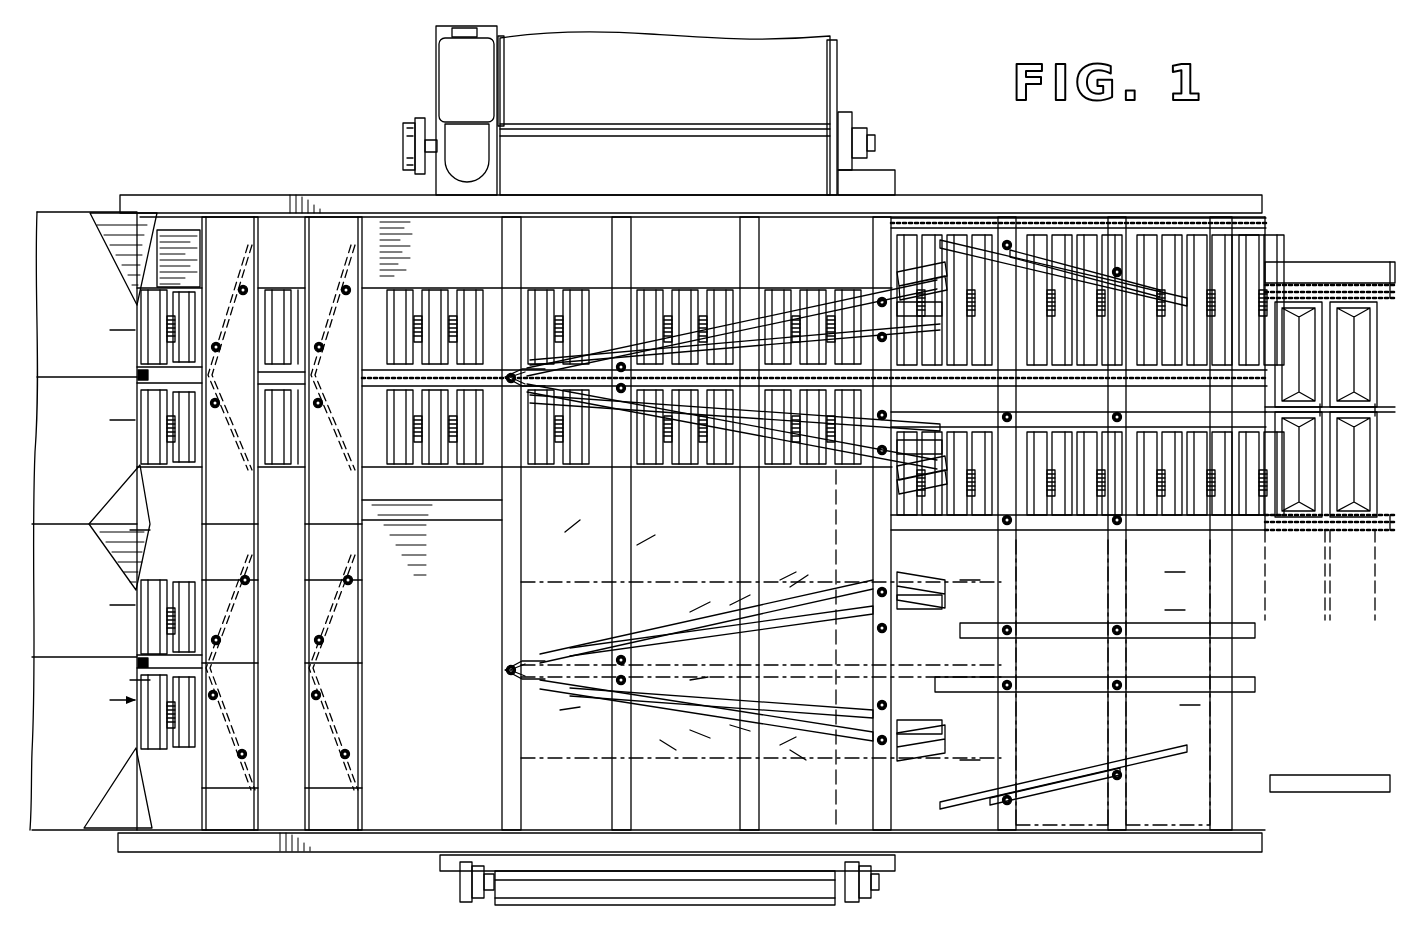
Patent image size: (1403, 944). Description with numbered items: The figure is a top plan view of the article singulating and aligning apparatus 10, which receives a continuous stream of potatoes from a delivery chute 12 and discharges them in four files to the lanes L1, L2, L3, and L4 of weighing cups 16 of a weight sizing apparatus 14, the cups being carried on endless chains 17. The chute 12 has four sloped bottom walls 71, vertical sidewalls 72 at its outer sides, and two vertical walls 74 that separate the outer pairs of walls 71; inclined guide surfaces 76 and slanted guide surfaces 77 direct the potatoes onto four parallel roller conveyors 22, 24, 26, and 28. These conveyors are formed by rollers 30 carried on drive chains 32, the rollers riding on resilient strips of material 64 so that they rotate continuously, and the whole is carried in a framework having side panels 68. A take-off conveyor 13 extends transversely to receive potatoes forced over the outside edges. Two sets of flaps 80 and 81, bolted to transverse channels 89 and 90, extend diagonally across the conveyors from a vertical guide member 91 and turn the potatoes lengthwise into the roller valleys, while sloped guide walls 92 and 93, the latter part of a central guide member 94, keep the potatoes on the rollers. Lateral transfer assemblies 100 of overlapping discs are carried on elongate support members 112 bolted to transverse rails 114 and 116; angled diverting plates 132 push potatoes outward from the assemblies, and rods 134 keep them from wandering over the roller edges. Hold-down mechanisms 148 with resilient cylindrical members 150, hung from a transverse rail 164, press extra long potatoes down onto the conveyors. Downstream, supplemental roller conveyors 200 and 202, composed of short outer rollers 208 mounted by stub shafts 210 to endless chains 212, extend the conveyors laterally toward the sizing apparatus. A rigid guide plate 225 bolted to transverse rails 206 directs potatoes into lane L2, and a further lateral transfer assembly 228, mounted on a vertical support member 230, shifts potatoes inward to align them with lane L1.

The article singulating and aligning apparatus 10 is at (1042, 162).
The delivery chute 12 is at (77, 210).
The take-off conveyor 13 is at (607, 175).
The weight sizing apparatus 14 is at (1325, 250).
The weighing cups 16 is at (1324, 288).
The endless chains 17 is at (1383, 297).
The roller conveyor 22 is at (140, 356).
The roller conveyor 24 is at (140, 407).
The roller conveyor 26 is at (141, 608).
The roller conveyor 28 is at (130, 707).
The rollers 30 is at (466, 294).
The drive chains 32 is at (803, 360).
The resilient strip of material 64 is at (156, 327).
The side panels 68 is at (298, 197).
The sloped bottom walls 71 is at (67, 294).
The vertical sidewalls 72 is at (93, 215).
The vertical walls 74 is at (76, 376).
The inclined guide surfaces 76 is at (109, 544).
The slanted guide surfaces 77 is at (126, 257).
The flaps 80 is at (229, 290).
The flaps 81 is at (332, 290).
The transverse channel 89 is at (238, 504).
The transverse channel 90 is at (343, 504).
The vertical guide member 91 is at (295, 376).
The sloped guide walls 92 is at (402, 242).
The sloped guide walls 93 is at (373, 510).
The central guide member 94 is at (446, 567).
The lateral transfer assemblies 100 is at (584, 350).
The elongate support member 112 is at (701, 362).
The transverse rail 114 is at (612, 556).
The transverse rail 116 is at (848, 552).
The angled diverting plates 132 is at (528, 350).
The rod 134 is at (773, 287).
The hold-down mechanism 148 is at (907, 273).
The resilient cylindrical member 150 is at (849, 332).
The transverse rail 164 is at (740, 556).
The supplemental roller conveyor 200 is at (1268, 243).
The supplemental roller conveyor 202 is at (1078, 536).
The transverse rails 206 is at (1092, 608).
The outer rollers 208 is at (1190, 255).
The stub shafts 210 is at (1112, 255).
The endless chains 212 is at (1015, 243).
The rigid guide plate 225 is at (1054, 515).
The lateral transfer assembly 228 is at (980, 237).
The vertical support member 230 is at (1042, 251).
The lane L1 is at (1302, 283).
The lane L2 is at (1279, 558).
The lane L3 is at (1265, 609).
The lane L4 is at (1265, 712).